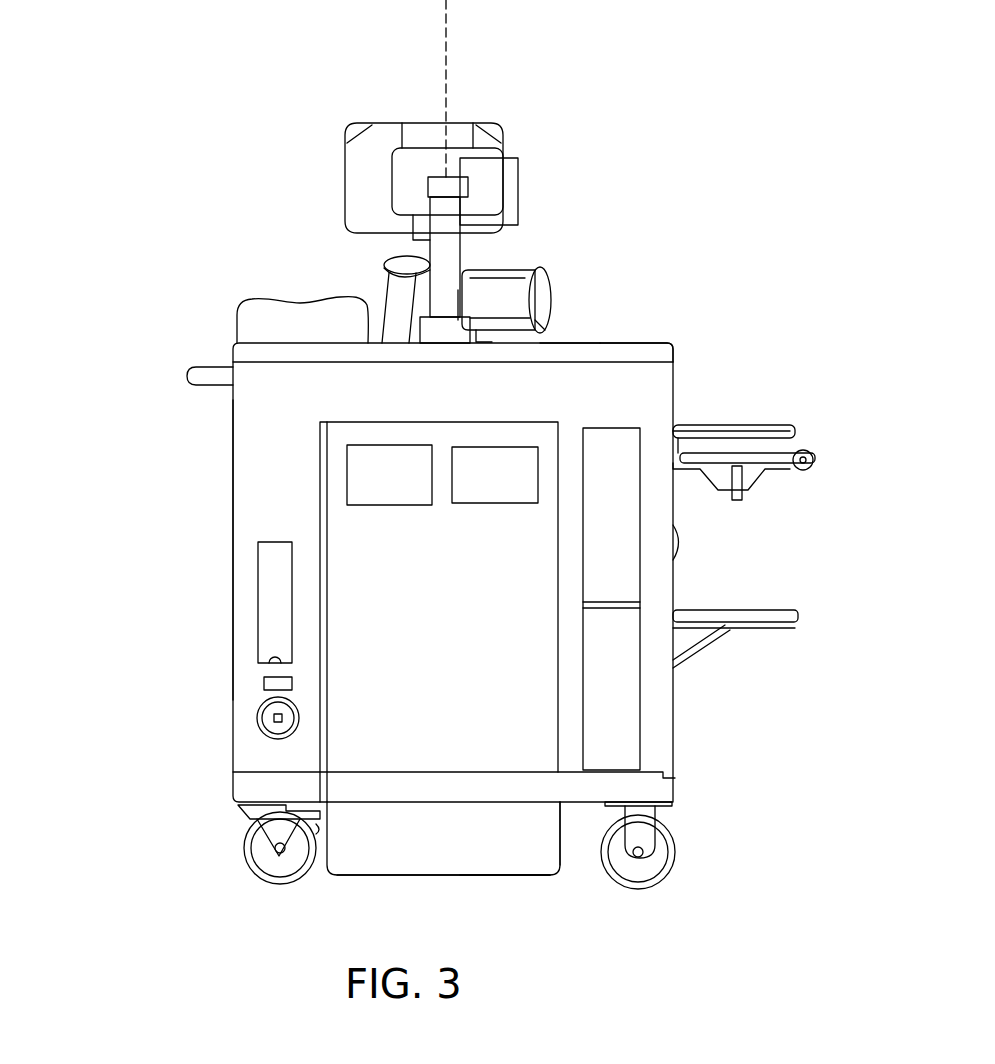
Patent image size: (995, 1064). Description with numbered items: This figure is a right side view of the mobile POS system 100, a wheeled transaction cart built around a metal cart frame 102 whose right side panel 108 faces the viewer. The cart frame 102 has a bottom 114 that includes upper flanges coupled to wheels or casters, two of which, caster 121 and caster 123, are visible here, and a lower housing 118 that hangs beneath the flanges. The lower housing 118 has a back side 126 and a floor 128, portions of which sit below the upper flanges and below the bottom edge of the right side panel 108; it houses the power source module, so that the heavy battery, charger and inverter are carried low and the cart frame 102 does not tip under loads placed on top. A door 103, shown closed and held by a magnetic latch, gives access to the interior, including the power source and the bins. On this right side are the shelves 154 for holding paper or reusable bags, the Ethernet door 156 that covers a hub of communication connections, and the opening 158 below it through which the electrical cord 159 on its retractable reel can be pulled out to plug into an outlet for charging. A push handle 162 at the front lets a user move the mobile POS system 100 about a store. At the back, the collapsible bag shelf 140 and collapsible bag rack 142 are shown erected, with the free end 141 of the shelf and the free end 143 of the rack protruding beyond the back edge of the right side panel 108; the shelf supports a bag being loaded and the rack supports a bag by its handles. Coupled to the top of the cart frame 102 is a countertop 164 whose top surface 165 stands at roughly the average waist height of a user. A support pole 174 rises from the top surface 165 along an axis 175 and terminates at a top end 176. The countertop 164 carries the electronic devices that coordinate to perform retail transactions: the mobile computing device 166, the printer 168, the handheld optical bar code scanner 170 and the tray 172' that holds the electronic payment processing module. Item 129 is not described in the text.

The mobile POS system 100 is at (132, 183).
The cart frame 102 is at (680, 377).
The door 103 is at (352, 533).
The right side panel 108 is at (270, 444).
The bottom 114 is at (481, 880).
The lower housing 118 is at (417, 820).
The caster 121 is at (678, 848).
The caster 123 is at (246, 850).
The back side 126 is at (562, 838).
The floor 128 is at (442, 875).
The latch 129 is at (320, 828).
The collapsible bag shelf 140 is at (767, 600).
The free end 141 is at (798, 616).
The collapsible bag rack 142 is at (810, 444).
The free end 143 is at (797, 432).
The shelves 154 is at (620, 614).
The Ethernet door 156 is at (258, 598).
The opening 158 is at (262, 708).
The electrical cord 159 is at (274, 720).
The push handle 162 is at (208, 372).
The countertop 164 is at (651, 347).
The top surface 165 is at (582, 343).
The mobile computing device 166 is at (497, 127).
The printer 168 is at (545, 283).
The handheld optical bar code scanner 170 is at (386, 300).
The tray 172' is at (271, 307).
The support pole 174 is at (452, 258).
The axis 175 is at (444, 73).
The top end 176 is at (507, 170).